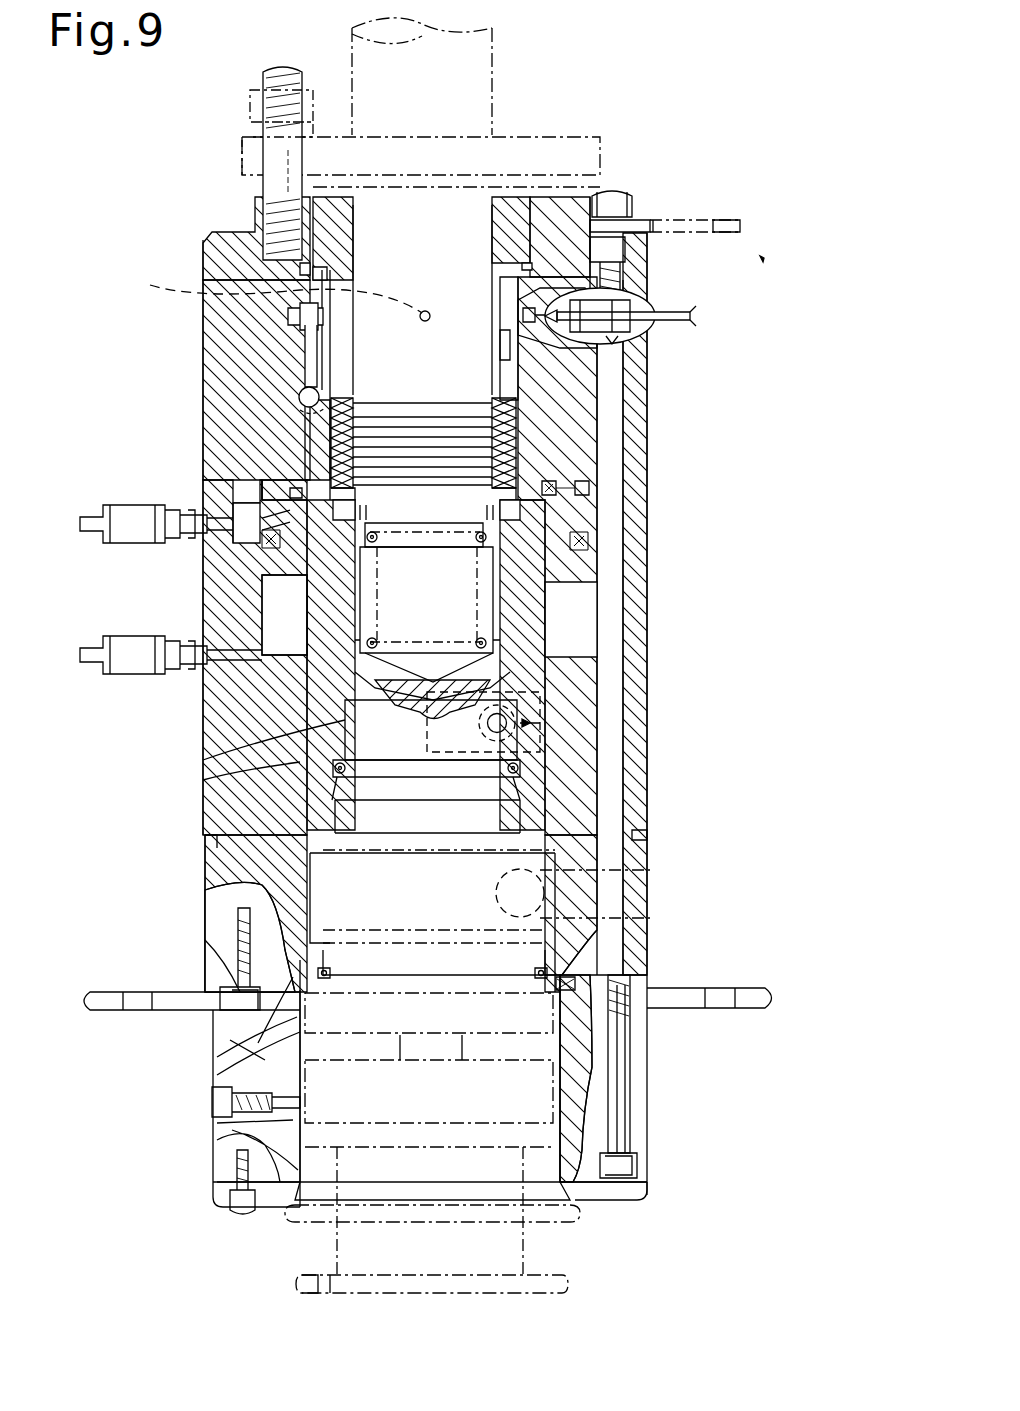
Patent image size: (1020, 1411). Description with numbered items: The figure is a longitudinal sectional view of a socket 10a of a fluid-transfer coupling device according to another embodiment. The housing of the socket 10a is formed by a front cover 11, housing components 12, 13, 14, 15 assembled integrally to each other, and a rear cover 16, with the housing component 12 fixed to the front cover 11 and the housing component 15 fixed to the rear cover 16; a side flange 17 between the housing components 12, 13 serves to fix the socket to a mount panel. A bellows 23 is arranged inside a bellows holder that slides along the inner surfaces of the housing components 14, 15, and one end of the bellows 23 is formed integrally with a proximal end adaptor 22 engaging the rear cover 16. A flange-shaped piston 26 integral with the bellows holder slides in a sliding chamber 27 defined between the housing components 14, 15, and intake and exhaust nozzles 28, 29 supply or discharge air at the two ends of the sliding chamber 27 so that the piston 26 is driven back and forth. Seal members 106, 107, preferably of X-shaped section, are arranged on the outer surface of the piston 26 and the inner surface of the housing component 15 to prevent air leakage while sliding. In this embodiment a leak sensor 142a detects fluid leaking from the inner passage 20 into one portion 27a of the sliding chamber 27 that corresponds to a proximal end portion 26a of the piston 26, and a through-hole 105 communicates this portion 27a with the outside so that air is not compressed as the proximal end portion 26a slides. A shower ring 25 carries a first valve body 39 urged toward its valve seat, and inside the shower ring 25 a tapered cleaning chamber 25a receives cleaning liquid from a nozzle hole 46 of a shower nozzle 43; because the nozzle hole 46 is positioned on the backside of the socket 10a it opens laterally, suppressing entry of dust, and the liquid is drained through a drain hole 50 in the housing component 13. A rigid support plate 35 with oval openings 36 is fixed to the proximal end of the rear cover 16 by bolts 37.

The socket 10a is at (765, 262).
The front cover 11 is at (630, 1196).
The housing component 12 is at (636, 1110).
The housing component 13 is at (636, 860).
The housing component 14 is at (636, 627).
The housing component 15 is at (633, 462).
The rear cover 16 is at (567, 215).
The side flange 17 is at (680, 1000).
The inner passage 20 is at (440, 268).
The proximal end adaptor 22 is at (510, 215).
The bellows 23 is at (440, 405).
The shower ring 25 is at (520, 630).
The cleaning chamber 25a is at (332, 780).
The piston 26 is at (270, 583).
The proximal end portion 26a is at (530, 440).
The sliding chamber 27 is at (278, 622).
The portion of the sliding chamber 27a is at (545, 387).
The intake and exhaust nozzle 28 is at (128, 517).
The intake and exhaust nozzle 29 is at (130, 648).
The support plate 35 is at (735, 225).
The oval opening 36 is at (700, 220).
The bolt 37 is at (622, 205).
The first valve body 39 is at (358, 748).
The shower nozzle 43 is at (545, 710).
The nozzle hole 46 is at (530, 716).
The drain hole 50 is at (545, 892).
The through-hole 105 is at (152, 285).
The seal member 106 is at (585, 541).
The seal member 107 is at (555, 488).
The leak sensor 142a is at (630, 334).